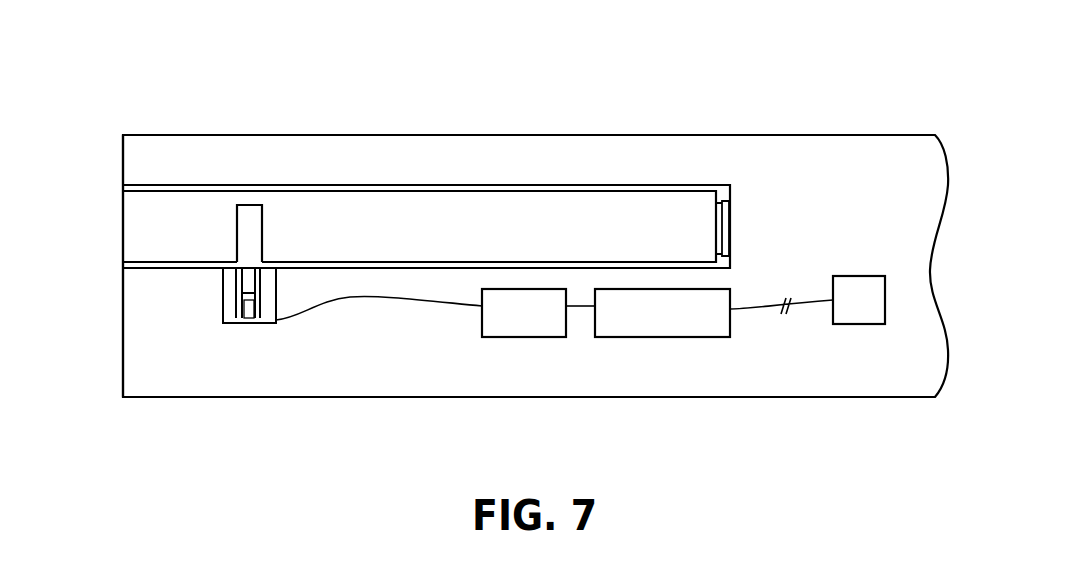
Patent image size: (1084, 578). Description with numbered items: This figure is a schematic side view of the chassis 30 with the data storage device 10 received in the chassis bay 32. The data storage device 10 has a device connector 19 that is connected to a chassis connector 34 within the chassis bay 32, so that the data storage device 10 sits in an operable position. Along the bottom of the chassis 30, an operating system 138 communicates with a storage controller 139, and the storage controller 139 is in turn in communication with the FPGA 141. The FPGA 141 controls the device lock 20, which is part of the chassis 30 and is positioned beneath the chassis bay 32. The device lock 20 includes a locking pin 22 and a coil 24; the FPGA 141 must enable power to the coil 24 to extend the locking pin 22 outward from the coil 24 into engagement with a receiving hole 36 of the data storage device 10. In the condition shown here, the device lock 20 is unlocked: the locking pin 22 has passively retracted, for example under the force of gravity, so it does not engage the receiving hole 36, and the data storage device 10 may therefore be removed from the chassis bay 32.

The data storage device 10 is at (123, 228).
The device connector 19 is at (716, 224).
The device lock 20 is at (223, 283).
The locking pin 22 is at (249, 318).
The coil 24 is at (223, 315).
The chassis 30 is at (610, 135).
The chassis bay 32 is at (624, 184).
The chassis connector 34 is at (729, 222).
The receiving hole 36 is at (237, 218).
The operating system 138 is at (850, 276).
The storage controller 139 is at (622, 337).
The FPGA 141 is at (526, 337).